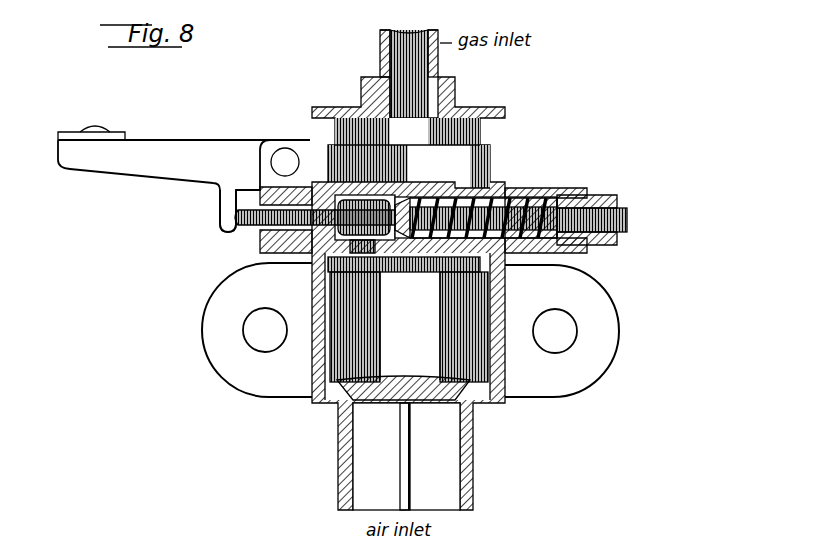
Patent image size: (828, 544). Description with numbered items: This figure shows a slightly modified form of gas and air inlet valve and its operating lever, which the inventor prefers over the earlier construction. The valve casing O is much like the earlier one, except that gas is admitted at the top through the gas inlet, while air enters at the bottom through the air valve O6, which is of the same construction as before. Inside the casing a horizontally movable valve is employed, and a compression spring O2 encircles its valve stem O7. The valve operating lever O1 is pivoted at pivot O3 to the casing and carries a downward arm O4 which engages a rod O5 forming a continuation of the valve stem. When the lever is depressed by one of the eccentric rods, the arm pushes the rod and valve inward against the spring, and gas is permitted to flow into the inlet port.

The valve casing O is at (505, 170).
The valve operating lever O1 is at (185, 146).
The compression spring O2 is at (548, 186).
The pivot O3 is at (285, 148).
The arm O4 is at (222, 218).
The rod O5 is at (245, 235).
The air valve O6 is at (338, 404).
The valve stem O7 is at (600, 220).